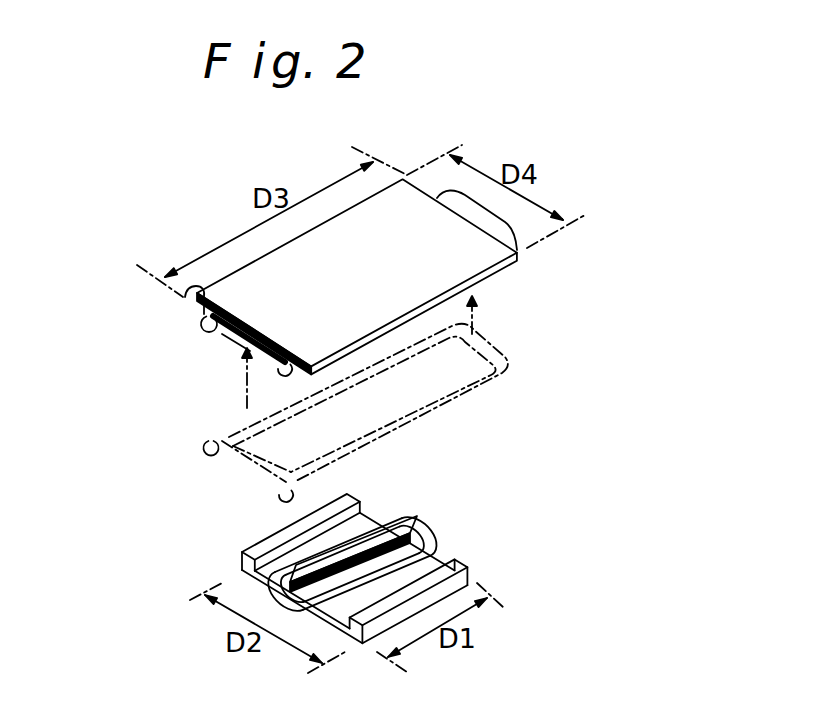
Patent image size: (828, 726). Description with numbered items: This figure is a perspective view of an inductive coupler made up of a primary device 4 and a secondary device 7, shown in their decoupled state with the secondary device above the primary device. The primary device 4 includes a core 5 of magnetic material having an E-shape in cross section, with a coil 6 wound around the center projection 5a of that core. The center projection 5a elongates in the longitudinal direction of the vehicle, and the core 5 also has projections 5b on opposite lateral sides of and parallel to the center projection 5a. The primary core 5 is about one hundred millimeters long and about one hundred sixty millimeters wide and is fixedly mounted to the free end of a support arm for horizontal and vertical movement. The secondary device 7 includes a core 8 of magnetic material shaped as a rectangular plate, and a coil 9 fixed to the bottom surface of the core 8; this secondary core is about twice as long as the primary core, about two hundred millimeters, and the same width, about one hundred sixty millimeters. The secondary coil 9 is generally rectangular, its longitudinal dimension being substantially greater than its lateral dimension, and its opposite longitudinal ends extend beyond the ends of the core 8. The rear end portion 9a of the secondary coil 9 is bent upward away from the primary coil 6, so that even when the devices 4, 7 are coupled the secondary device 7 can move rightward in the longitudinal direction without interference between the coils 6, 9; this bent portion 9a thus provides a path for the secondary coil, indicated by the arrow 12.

The primary device 4 is at (357, 553).
The core 5 is at (243, 578).
The center projection 5a is at (385, 537).
The projections 5b is at (262, 537).
The coil 6 is at (422, 513).
The secondary device 7 is at (543, 258).
The core 8 is at (185, 297).
The coil 9 is at (247, 345).
The bent portion 9a is at (205, 318).
The arrow 12 is at (229, 345).